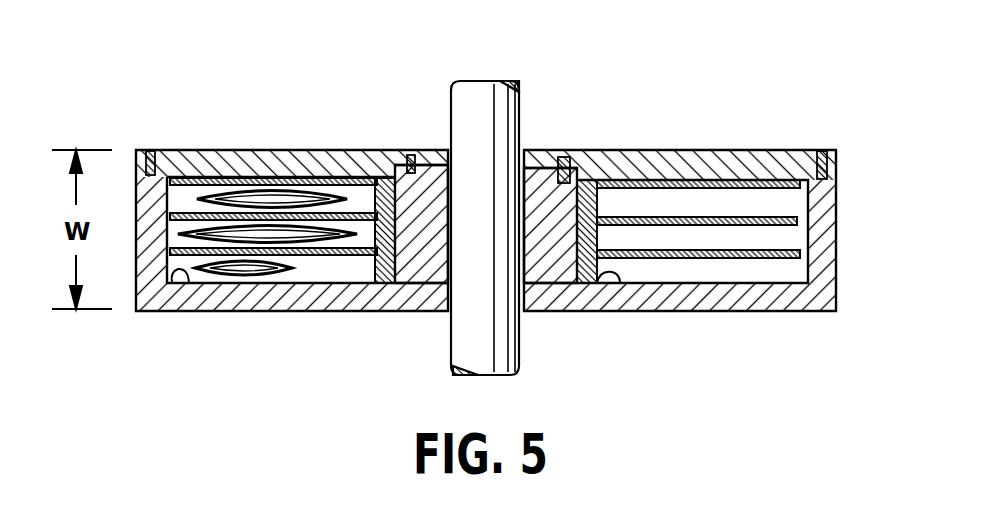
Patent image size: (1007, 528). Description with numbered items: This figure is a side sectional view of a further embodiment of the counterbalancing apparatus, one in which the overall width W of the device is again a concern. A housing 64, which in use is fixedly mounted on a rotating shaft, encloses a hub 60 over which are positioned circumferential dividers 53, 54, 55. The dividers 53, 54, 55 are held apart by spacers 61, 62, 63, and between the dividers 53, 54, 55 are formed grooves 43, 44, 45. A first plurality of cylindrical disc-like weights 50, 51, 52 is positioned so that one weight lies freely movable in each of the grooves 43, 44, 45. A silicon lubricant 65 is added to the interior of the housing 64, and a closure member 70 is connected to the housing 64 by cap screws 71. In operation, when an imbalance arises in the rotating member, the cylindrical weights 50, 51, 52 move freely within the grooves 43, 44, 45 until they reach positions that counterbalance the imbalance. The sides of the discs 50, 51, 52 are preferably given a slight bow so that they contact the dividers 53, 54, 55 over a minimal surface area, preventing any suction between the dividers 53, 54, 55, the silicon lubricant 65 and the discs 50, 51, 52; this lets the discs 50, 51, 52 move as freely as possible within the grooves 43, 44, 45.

The groove 43 is at (785, 206).
The groove 44 is at (785, 240).
The groove 45 is at (785, 270).
The cylindrical disc-like weight 50 is at (222, 190).
The cylindrical disc-like weight 51 is at (356, 180).
The cylindrical disc-like weight 52 is at (248, 281).
The circumferential divider 53 is at (672, 181).
The circumferential divider 54 is at (725, 218).
The circumferential divider 55 is at (737, 259).
The hub 60 is at (386, 178).
The spacer 61 is at (628, 188).
The spacer 62 is at (632, 262).
The spacer 63 is at (620, 283).
The housing 64 is at (135, 284).
The silicon lubricant 65 is at (189, 283).
The closure member 70 is at (778, 150).
The cap screws 71 is at (149, 151).